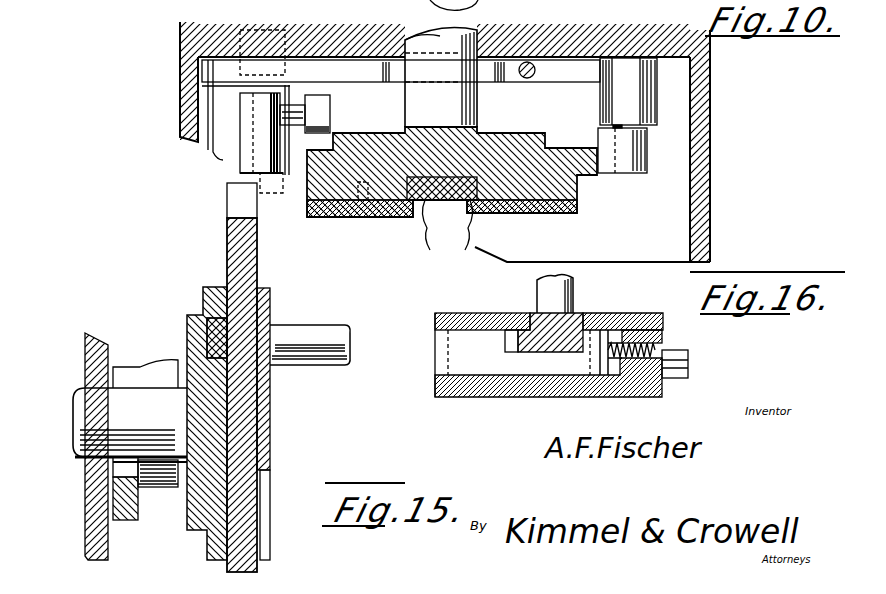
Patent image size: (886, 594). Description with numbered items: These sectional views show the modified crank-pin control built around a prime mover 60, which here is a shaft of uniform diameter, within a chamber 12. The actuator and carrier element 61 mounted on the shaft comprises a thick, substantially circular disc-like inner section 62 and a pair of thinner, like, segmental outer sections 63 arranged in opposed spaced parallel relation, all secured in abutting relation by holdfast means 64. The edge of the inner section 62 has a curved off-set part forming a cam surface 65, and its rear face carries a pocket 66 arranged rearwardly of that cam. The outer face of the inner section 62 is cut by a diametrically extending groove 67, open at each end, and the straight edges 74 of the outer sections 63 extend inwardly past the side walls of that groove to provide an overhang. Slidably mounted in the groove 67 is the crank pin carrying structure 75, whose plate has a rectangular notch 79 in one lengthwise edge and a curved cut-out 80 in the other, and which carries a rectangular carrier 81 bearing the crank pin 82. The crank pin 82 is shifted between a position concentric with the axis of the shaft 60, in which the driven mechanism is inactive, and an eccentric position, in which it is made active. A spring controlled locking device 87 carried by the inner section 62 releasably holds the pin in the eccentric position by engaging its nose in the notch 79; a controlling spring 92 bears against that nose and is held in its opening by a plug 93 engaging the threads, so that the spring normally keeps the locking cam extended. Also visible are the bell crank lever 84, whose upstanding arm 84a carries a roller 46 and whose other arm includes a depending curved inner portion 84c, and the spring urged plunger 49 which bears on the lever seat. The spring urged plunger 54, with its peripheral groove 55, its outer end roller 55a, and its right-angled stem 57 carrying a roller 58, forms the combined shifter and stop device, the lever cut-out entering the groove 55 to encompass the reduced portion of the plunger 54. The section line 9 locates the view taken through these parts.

In FIG. 10, the section line 9 is at (402, 16).
In FIG. 10, the chamber 12 is at (445, 142).
In FIG. 10, the roller 46 is at (645, 165).
In FIG. 10, the spring urged plunger 49 is at (535, 70).
In FIG. 10, the spring urged plunger 54 is at (245, 105).
In FIG. 10, the peripheral groove 55 is at (215, 90).
In FIG. 10, the roller 55a is at (279, 235).
In FIG. 10, the stem 57 is at (292, 108).
In FIG. 10, the roller 58 is at (330, 102).
In FIG. 10, the prime mover 60 is at (480, 105).
In FIG. 15, the prime mover 60 is at (123, 397).
In FIG. 10, the actuator and carrier element 61 is at (590, 196).
In FIG. 15, the actuator and carrier element 61 is at (185, 327).
In FIG. 16, the actuator and carrier element 61 is at (515, 406).
In FIG. 10, the inner section 62 is at (577, 214).
In FIG. 15, the inner section 62 is at (198, 310).
In FIG. 16, the inner section 62 is at (440, 385).
In FIG. 10, the outer sections 63 is at (398, 218).
In FIG. 15, the outer sections 63 is at (272, 503).
In FIG. 16, the outer sections 63 is at (732, 337).
In FIG. 10, the holdfast means 64 is at (345, 222).
In FIG. 10, the cam surface 65 is at (608, 160).
In FIG. 10, the pocket 66 is at (335, 138).
In FIG. 10, the diametrically extending groove 67 is at (470, 160).
In FIG. 15, the diametrically extending groove 67 is at (235, 530).
In FIG. 10, the straight edges 74 is at (442, 224).
In FIG. 15, the straight edges 74 is at (262, 478).
In FIG. 15, the crank pin carrying structure 75 is at (268, 274).
In FIG. 16, the rectangular notch 79 is at (588, 347).
In FIG. 16, the curved cut-out 80 is at (505, 340).
In FIG. 15, the rectangular carrier 81 is at (271, 405).
In FIG. 16, the rectangular carrier 81 is at (542, 312).
In FIG. 15, the crank pin 82 is at (328, 366).
In FIG. 16, the crank pin 82 is at (576, 294).
In FIG. 10, the bell crank lever 84 is at (635, 82).
In FIG. 10, the upstanding arm 84a is at (748, 80).
In FIG. 15, the upstanding arm 84a is at (133, 520).
In FIG. 10, the curved inner portion 84c is at (572, 70).
In FIG. 15, the curved inner portion 84c is at (162, 490).
In FIG. 15, the locking device 87 is at (207, 290).
In FIG. 16, the controlling spring 92 is at (635, 330).
In FIG. 16, the plug 93 is at (690, 357).